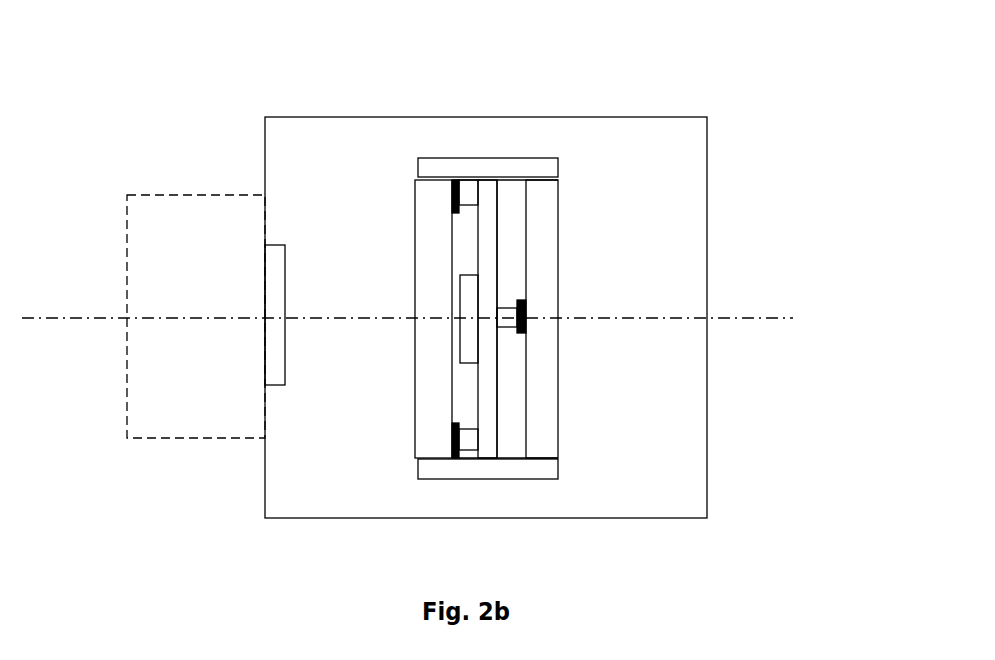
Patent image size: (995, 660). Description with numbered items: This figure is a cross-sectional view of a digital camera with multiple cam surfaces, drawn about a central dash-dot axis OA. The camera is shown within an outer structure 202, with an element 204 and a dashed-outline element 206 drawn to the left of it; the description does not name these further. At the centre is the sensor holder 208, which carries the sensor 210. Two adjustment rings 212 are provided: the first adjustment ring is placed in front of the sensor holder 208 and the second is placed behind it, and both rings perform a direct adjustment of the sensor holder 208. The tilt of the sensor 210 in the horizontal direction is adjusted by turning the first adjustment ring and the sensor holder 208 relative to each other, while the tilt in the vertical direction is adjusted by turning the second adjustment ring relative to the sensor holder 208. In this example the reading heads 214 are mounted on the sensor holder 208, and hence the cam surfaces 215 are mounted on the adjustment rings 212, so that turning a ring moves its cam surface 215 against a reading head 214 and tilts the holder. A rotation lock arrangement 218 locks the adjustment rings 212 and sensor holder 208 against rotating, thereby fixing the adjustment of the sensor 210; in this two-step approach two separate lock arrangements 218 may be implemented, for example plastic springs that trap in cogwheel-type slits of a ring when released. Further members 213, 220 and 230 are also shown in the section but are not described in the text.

The housing 202 is at (265, 117).
The aperture / lens opening 204 is at (277, 243).
The lens element (dashed) 206 is at (210, 438).
The sensor holder 208 is at (472, 412).
The sensor 210 is at (460, 342).
The adjustment rings 212 is at (415, 428).
The housing side wall 213 is at (558, 433).
The reading heads 214 is at (463, 182).
The cam surfaces 215 is at (453, 180).
The rotation lock arrangement 218 is at (558, 468).
The top plate 220 is at (478, 257).
The guide member 230 is at (497, 222).
The optical axis OA is at (795, 320).